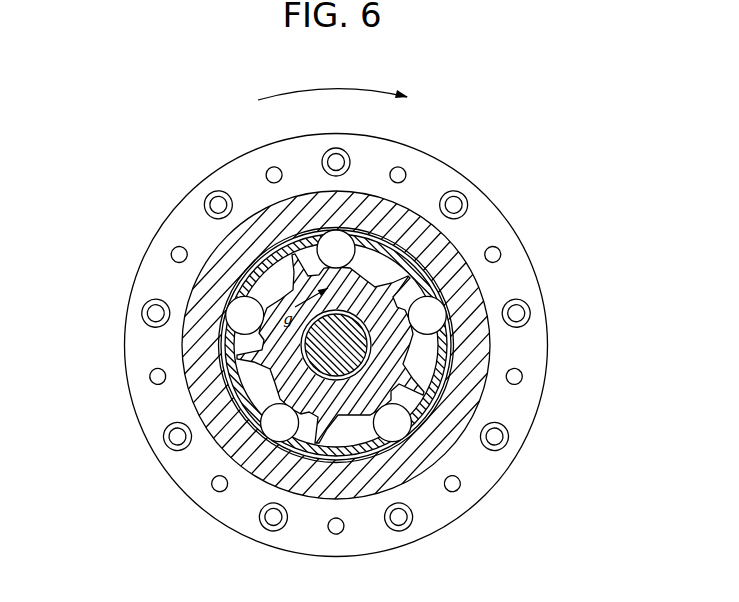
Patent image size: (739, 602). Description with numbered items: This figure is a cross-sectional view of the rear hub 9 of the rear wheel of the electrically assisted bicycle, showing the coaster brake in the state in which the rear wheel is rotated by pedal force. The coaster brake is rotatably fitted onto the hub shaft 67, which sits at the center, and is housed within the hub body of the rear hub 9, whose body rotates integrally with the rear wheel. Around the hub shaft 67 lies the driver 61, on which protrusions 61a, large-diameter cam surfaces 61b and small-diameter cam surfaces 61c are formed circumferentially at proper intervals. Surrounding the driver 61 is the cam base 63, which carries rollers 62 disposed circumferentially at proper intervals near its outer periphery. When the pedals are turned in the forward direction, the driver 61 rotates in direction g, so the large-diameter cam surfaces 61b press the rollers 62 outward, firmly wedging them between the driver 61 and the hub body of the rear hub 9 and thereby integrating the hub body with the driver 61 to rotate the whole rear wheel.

The rear hub 9 is at (437, 447).
The driver 61 is at (342, 350).
The protrusions 61a is at (232, 343).
The large-diameter cam surfaces 61b is at (258, 324).
The small-diameter cam surfaces 61c is at (318, 250).
The rollers 62 is at (340, 232).
The cam base 63 is at (293, 262).
The hub shaft 67 is at (341, 382).